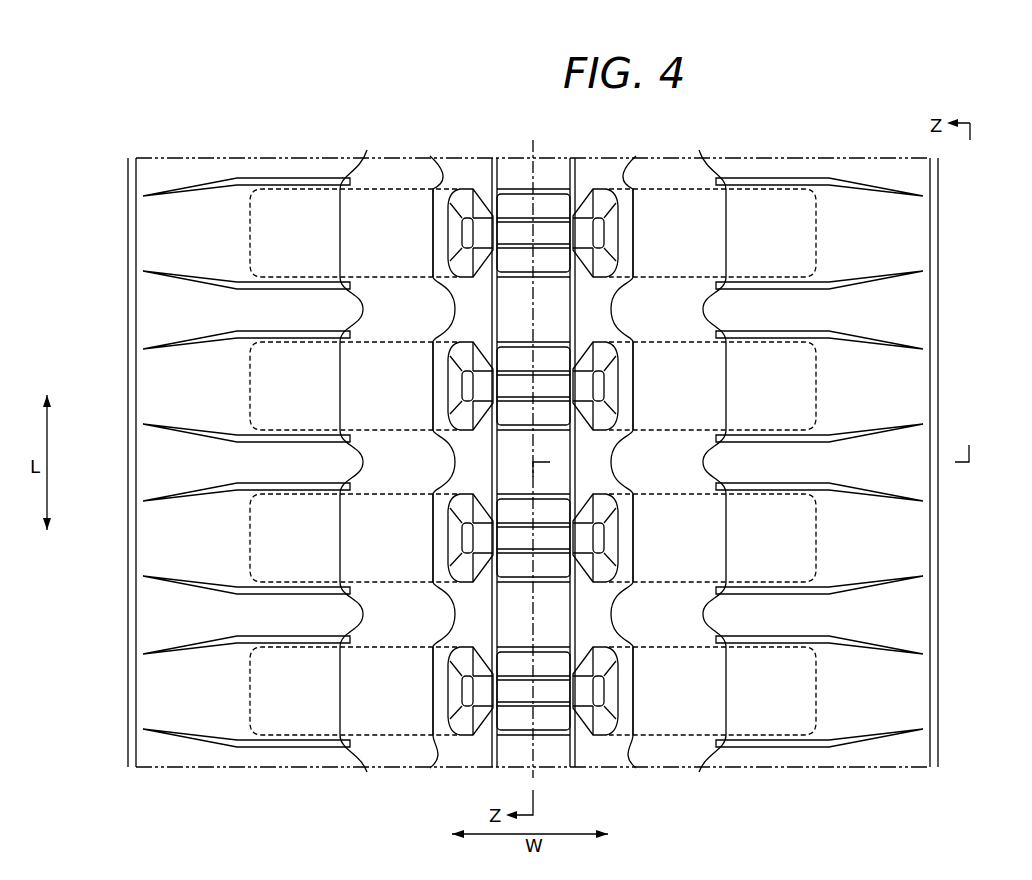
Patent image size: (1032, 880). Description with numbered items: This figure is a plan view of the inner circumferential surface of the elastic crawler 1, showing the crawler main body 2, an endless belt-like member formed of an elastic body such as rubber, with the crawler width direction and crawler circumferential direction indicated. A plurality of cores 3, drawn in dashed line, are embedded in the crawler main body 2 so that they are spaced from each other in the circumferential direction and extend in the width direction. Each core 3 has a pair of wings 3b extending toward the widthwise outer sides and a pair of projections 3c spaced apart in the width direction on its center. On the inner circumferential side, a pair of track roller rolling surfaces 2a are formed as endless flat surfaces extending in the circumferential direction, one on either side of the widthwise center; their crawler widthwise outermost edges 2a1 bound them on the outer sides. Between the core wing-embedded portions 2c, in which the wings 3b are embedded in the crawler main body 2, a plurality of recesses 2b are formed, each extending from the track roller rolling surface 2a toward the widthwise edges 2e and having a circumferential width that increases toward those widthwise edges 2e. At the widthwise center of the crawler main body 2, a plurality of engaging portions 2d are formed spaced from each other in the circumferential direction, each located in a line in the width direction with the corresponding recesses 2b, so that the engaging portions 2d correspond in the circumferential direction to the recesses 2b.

The elastic crawler 1 is at (972, 266).
The crawler main body 2 is at (935, 345).
The track roller rolling surface 2a is at (398, 177).
The crawler widthwise outermost edge of the track roller rolling surface 2a1 is at (340, 237).
The recess 2b is at (207, 170).
The core wing-embedded portion 2c is at (217, 230).
The engaging portion 2d is at (549, 166).
The widthwise edge 2e is at (128, 658).
The core 3 is at (529, 462).
The wing 3b is at (250, 240).
The projection 3c is at (462, 235).